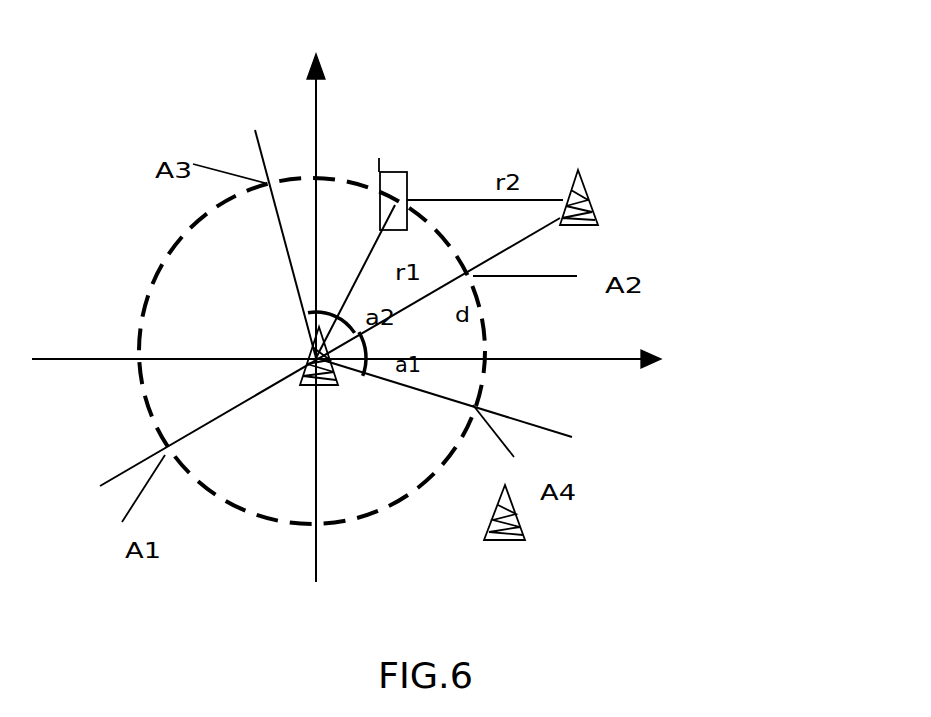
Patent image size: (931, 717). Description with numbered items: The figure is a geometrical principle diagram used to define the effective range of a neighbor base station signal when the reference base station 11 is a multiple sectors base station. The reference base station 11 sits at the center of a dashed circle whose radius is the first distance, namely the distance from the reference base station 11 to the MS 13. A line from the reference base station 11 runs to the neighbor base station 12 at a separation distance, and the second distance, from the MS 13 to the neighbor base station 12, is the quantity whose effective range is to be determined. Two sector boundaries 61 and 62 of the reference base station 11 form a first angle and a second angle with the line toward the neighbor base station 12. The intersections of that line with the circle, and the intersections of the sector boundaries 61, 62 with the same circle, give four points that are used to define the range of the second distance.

The reference base station 11 is at (300, 350).
The neighbor base station 12 is at (637, 328).
The MS 13 is at (462, 142).
The sector boundary 61 is at (572, 399).
The sector boundary 62 is at (185, 225).